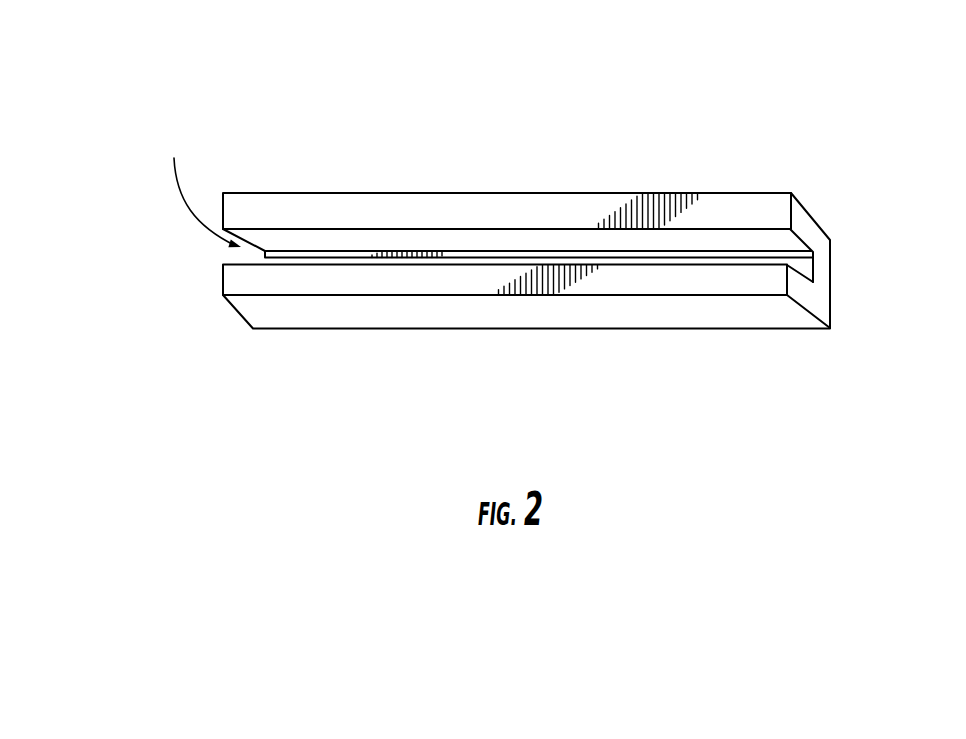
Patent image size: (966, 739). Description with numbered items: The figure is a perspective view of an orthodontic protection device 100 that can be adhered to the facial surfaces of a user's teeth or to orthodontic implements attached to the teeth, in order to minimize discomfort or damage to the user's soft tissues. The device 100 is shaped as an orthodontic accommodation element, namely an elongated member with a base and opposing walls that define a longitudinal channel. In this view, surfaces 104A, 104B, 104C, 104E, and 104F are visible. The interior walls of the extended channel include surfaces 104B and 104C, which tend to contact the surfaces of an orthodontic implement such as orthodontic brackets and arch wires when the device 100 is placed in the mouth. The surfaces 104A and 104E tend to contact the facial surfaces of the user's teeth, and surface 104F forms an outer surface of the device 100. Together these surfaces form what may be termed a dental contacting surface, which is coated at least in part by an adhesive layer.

The device 100 is at (271, 98).
The surface 104A is at (412, 210).
The surface 104B is at (805, 247).
The surface 104C is at (807, 267).
The surface 104E is at (753, 282).
The surface 104F is at (662, 318).